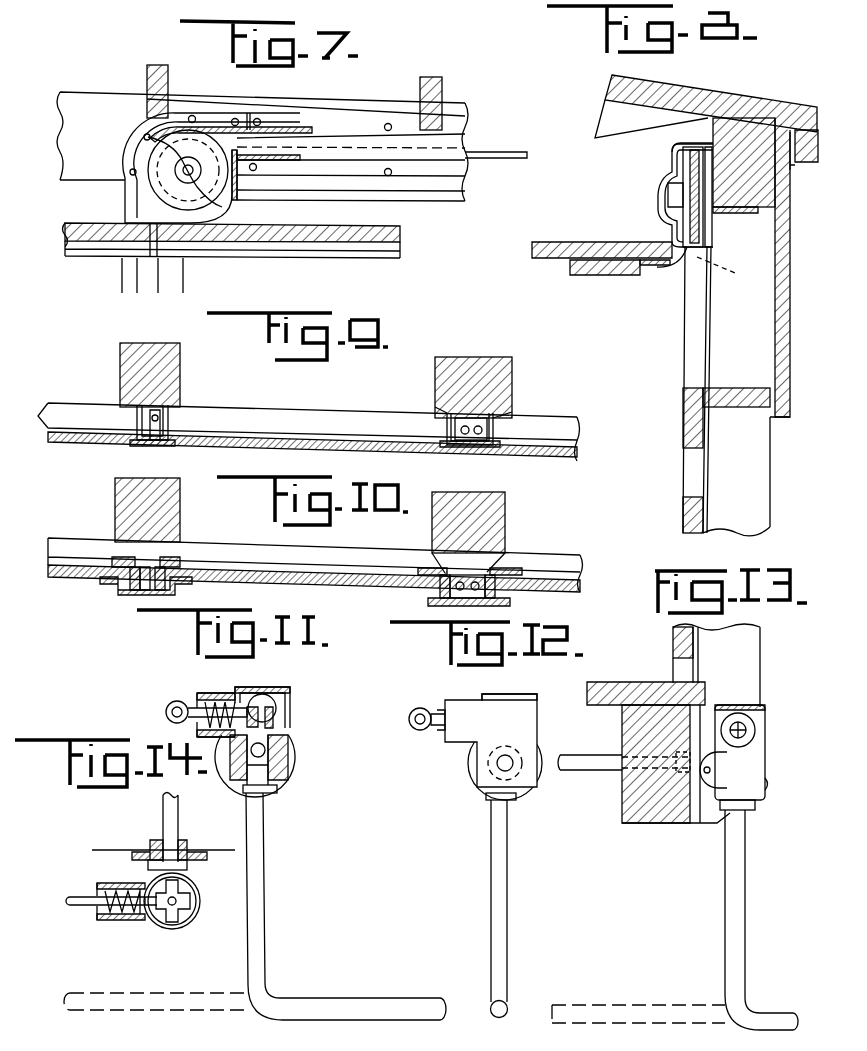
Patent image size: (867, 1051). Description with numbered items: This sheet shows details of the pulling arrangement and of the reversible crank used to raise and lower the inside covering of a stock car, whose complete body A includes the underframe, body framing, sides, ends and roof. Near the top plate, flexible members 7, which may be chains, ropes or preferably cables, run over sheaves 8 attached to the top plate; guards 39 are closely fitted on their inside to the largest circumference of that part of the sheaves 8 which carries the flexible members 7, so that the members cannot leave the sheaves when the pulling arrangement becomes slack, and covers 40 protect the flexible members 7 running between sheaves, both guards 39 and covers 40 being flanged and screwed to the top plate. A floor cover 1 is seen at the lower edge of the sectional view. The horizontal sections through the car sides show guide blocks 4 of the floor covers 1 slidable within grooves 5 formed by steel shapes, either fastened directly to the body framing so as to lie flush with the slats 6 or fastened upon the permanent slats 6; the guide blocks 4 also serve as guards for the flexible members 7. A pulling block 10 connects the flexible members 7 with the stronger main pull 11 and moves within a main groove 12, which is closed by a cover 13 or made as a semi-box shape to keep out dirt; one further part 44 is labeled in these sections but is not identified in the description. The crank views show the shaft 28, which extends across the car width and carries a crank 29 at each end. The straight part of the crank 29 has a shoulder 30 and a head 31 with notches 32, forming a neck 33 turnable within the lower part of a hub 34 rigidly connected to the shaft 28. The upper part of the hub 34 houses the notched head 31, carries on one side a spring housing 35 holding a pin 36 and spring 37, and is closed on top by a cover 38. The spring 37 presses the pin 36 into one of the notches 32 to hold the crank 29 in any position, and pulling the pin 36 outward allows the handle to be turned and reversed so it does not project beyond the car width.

In FIG. 8, the floor covers 1 is at (545, 257).
In FIG. 8, the guide blocks 4 is at (723, 273).
In FIG. 9, the guide blocks 4 is at (140, 430).
In FIG. 10, the guide blocks 4 is at (145, 587).
In FIG. 9, the grooves 5 is at (150, 410).
In FIG. 10, the grooves 5 is at (135, 558).
In FIG. 8, the slats 6 is at (683, 510).
In FIG. 9, the slats 6 is at (205, 418).
In FIG. 10, the slats 6 is at (192, 550).
In FIG. 7, the flexible members 7 is at (495, 154).
In FIG. 8, the flexible members 7 is at (664, 268).
In FIG. 9, the flexible members 7 is at (160, 432).
In FIG. 10, the flexible members 7 is at (130, 582).
In FIG. 7, the sheaves 8 is at (213, 190).
In FIG. 8, the sheaves 8 is at (695, 223).
In FIG. 9, the pulling block 10 is at (490, 417).
In FIG. 10, the pulling block 10 is at (495, 566).
In FIG. 9, the main pull 11 is at (475, 443).
In FIG. 10, the main pull 11 is at (500, 599).
In FIG. 9, the main grooves 12 is at (462, 420).
In FIG. 10, the main grooves 12 is at (460, 570).
In FIG. 9, the covers 13 is at (450, 442).
In FIG. 13, the shaft 28 is at (605, 768).
In FIG. 14, the shaft 28 is at (165, 805).
In FIG. 11, the crank 29 is at (260, 918).
In FIG. 12, the crank 29 is at (505, 898).
In FIG. 13, the crank 29 is at (735, 937).
In FIG. 11, the shoulder 30 is at (275, 792).
In FIG. 13, the shoulder 30 is at (752, 815).
In FIG. 11, the head 31 is at (272, 718).
In FIG. 14, the head 31 is at (158, 915).
In FIG. 11, the notches 32 is at (290, 725).
In FIG. 14, the notches 32 is at (188, 898).
In FIG. 11, the neck 33 is at (268, 772).
In FIG. 11, the hub 34 is at (297, 758).
In FIG. 12, the hub 34 is at (500, 730).
In FIG. 13, the hub 34 is at (747, 772).
In FIG. 14, the hub 34 is at (185, 930).
In FIG. 11, the spring housing 35 is at (207, 693).
In FIG. 12, the spring housing 35 is at (468, 727).
In FIG. 13, the spring housing 35 is at (748, 732).
In FIG. 14, the spring housing 35 is at (95, 912).
In FIG. 11, the pin 36 is at (165, 705).
In FIG. 12, the pin 36 is at (435, 730).
In FIG. 14, the pin 36 is at (80, 897).
In FIG. 11, the spring 37 is at (222, 695).
In FIG. 14, the spring 37 is at (113, 918).
In FIG. 11, the cover 38 is at (280, 688).
In FIG. 12, the cover 38 is at (498, 695).
In FIG. 13, the cover 38 is at (735, 706).
In FIG. 7, the guards 39 is at (210, 127).
In FIG. 8, the guards 39 is at (660, 193).
In FIG. 7, the covers 40 is at (289, 132).
In FIG. 8, the covers 40 is at (672, 152).
In FIG. 9, the base plate 44 is at (320, 445).
In FIG. 10, the base plate 44 is at (302, 583).
In FIG. 8, the body of a stock car A is at (747, 300).
In FIG. 13, the body of a stock car A is at (648, 740).